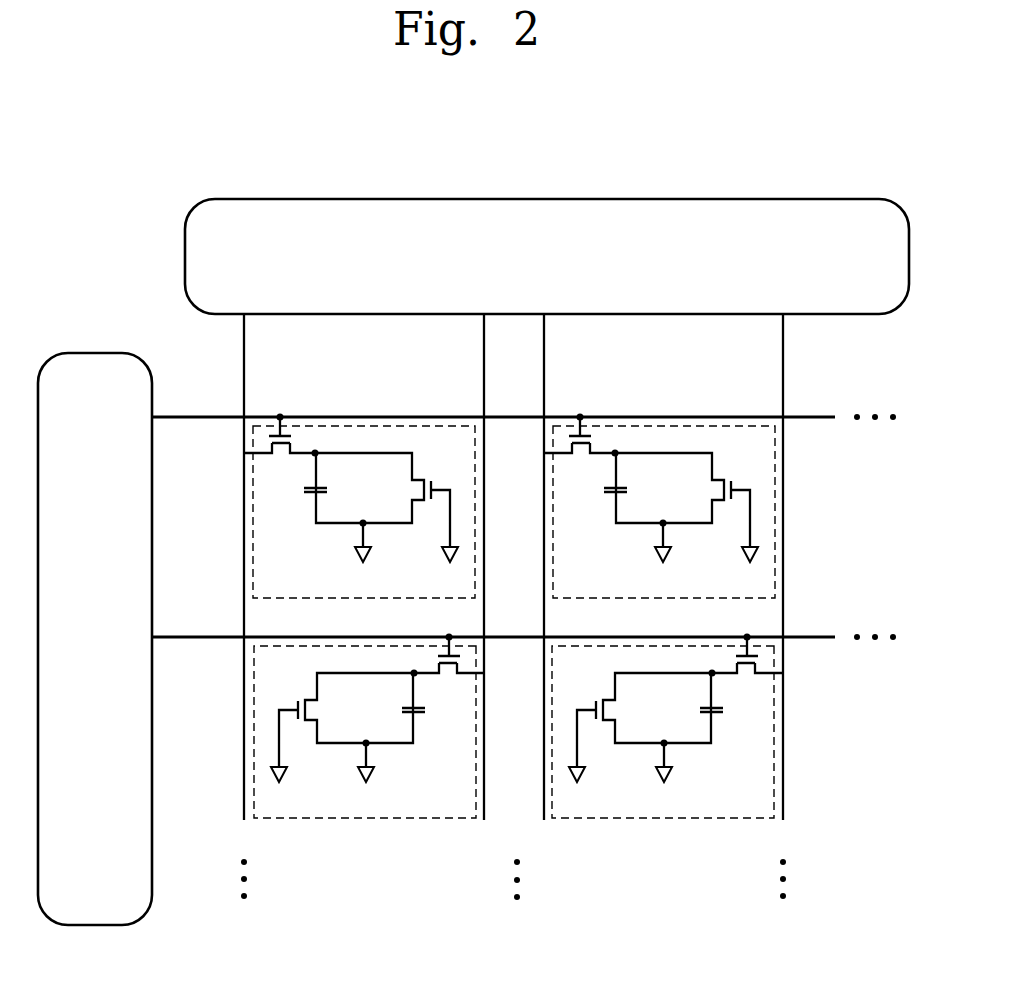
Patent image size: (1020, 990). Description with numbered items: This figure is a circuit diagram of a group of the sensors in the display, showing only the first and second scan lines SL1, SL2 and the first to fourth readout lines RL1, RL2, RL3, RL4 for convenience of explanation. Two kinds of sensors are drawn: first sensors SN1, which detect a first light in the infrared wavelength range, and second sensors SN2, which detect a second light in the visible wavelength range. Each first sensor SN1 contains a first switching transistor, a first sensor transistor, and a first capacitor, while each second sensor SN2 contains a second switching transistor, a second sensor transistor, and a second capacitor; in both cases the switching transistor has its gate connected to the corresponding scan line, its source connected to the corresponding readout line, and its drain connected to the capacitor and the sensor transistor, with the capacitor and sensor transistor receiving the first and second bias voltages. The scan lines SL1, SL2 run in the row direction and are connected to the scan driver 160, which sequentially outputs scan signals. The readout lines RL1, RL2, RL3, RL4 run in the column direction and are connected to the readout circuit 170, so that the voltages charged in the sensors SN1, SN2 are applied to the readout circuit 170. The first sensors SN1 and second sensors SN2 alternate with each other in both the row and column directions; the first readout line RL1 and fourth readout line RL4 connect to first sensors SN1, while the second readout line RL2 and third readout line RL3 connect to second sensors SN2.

The readout circuit 170 is at (790, 199).
The scan driver 160 is at (96, 927).
The first sensor SN1 is at (252, 508).
The second sensor SN2 is at (773, 509).
The first readout line RL1 is at (265, 567).
The second readout line RL2 is at (466, 567).
The third readout line RL3 is at (565, 567).
The fourth readout line RL4 is at (763, 567).
The first scan line SL1 is at (810, 417).
The second scan line SL2 is at (810, 637).